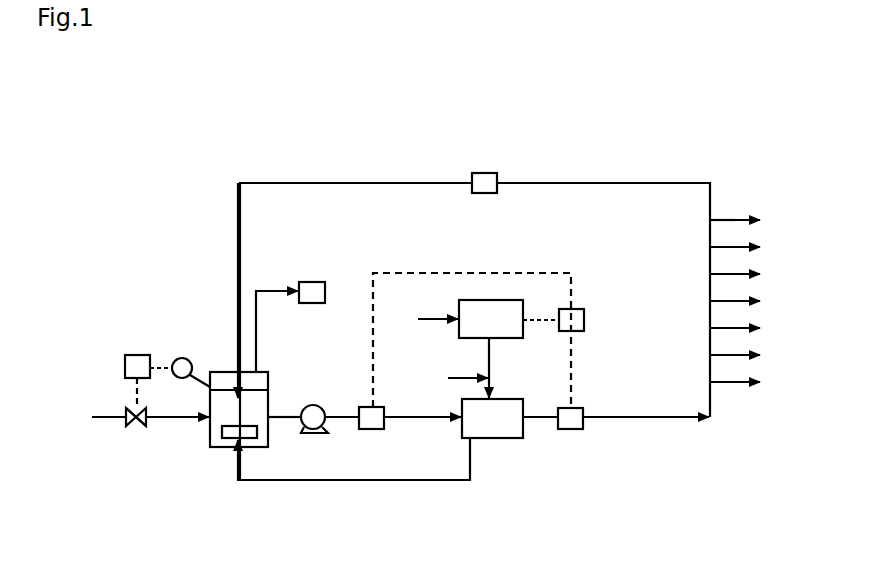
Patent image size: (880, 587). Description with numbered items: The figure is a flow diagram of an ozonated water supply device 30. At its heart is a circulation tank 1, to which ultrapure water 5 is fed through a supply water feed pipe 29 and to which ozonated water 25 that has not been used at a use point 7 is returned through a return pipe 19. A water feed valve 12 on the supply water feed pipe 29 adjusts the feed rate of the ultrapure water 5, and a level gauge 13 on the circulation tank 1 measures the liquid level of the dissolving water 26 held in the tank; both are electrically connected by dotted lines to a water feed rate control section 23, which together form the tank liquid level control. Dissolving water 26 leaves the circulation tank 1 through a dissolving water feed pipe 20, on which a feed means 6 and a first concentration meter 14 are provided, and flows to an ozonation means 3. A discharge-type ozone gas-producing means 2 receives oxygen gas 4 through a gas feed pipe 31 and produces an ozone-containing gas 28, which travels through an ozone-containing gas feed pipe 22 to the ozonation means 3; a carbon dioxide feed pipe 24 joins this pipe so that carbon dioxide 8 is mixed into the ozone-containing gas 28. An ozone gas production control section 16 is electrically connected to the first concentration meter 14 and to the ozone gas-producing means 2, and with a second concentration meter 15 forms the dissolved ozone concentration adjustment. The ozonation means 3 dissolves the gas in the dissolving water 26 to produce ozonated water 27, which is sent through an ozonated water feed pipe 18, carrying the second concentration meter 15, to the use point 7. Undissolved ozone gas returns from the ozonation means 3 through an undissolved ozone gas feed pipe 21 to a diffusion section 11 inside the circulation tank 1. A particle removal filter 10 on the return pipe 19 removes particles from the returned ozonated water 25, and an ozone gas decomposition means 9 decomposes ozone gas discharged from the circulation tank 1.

The circulation tank 1 is at (208, 438).
The discharge-type ozone gas-producing means 2 is at (500, 299).
The ozonation means 3 is at (505, 439).
The oxygen gas 4 is at (428, 320).
The ultrapure water 5 is at (138, 418).
The feed means 6 is at (310, 404).
The use point 7 is at (746, 301).
The carbon dioxide 8 is at (459, 379).
The ozone gas decomposition means 9 is at (318, 281).
The particle removal filter 10 is at (488, 172).
The diffusion section 11 is at (223, 438).
The water feed valve 12 is at (129, 423).
The level gauge 13 is at (175, 360).
The first concentration meter 14 is at (373, 430).
The second concentration meter 15 is at (577, 430).
The ozone gas production control section 16 is at (584, 309).
The ozonated water feed pipe 18 is at (623, 420).
The return pipe 19 is at (603, 182).
The dissolving water feed pipe 20 is at (418, 418).
The undissolved ozone gas feed pipe 21 is at (343, 482).
The ozone-containing gas feed pipe 22 is at (489, 365).
The water feed rate control section 23 is at (132, 354).
The carbon dioxide feed pipe 24 is at (486, 377).
The ozonated water 25 is at (333, 182).
The dissolving water 26 is at (233, 398).
The ozonated water 27 is at (733, 218).
The ozone-containing gas 28 is at (489, 385).
The supply water feed pipe 29 is at (168, 418).
The ozonated water supply device 30 is at (727, 125).
The gas feed pipe 31 is at (438, 315).